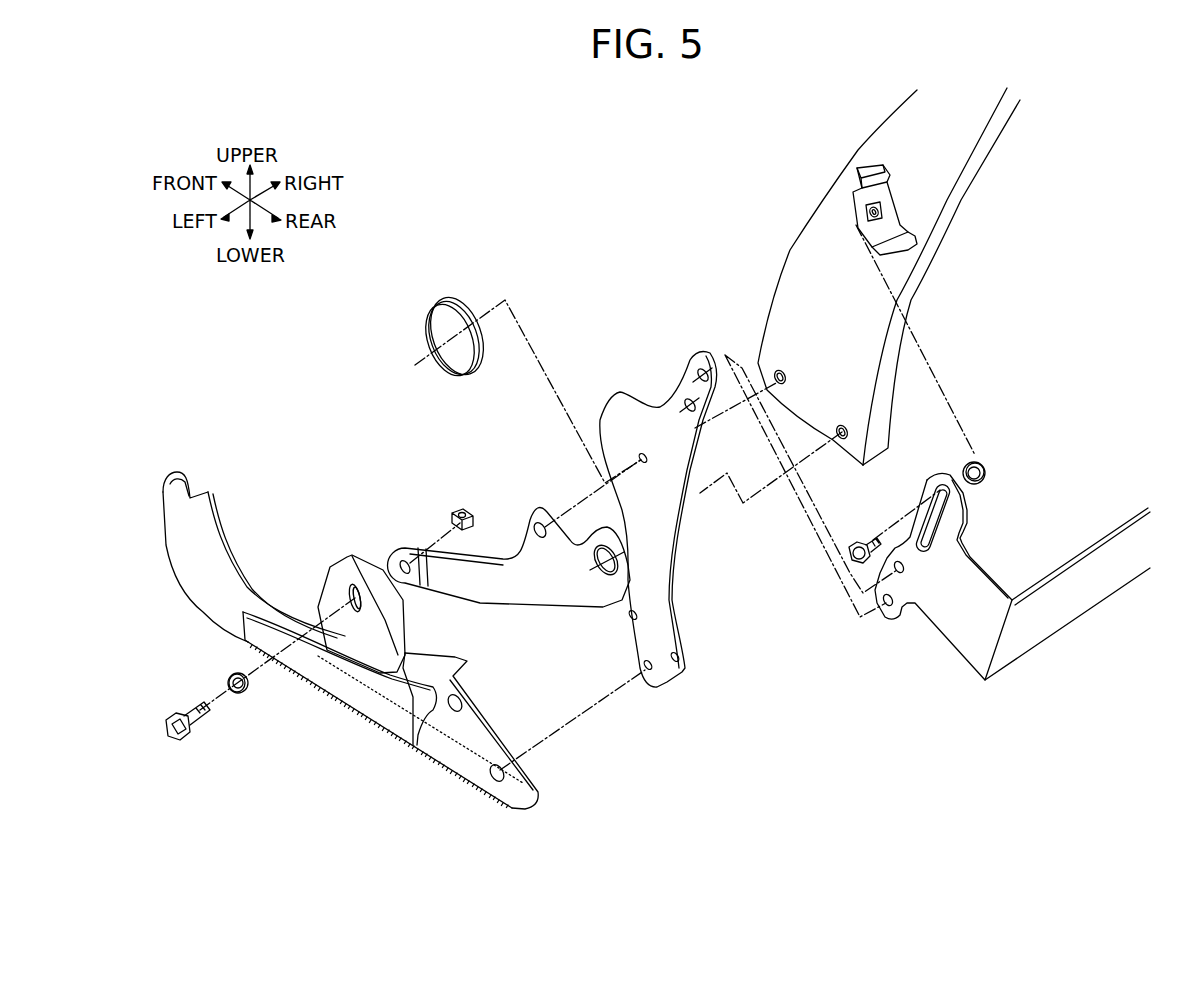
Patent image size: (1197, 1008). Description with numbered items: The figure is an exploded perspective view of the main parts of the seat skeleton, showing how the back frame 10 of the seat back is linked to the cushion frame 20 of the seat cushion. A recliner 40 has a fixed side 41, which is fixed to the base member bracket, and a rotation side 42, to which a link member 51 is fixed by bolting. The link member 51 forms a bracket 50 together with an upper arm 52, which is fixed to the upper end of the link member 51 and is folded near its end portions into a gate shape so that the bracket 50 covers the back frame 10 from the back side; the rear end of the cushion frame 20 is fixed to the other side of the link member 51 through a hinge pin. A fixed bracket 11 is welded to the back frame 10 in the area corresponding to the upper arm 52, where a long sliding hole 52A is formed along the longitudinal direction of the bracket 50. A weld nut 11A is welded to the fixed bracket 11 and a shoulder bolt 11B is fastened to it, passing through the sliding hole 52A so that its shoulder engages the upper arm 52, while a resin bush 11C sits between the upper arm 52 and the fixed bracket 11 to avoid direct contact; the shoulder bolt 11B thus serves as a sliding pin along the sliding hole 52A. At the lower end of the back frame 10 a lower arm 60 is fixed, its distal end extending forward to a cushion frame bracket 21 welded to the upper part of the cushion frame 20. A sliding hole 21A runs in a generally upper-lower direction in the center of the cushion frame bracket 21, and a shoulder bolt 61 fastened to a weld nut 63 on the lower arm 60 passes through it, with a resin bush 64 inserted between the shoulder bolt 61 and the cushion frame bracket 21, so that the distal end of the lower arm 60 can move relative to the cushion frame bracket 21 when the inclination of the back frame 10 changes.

The back frame 10 is at (810, 283).
The fixed bracket 11 is at (894, 181).
The weld nut 11A is at (882, 206).
The shoulder bolt 11B is at (855, 542).
The resin bush 11C is at (988, 477).
The cushion frame 20 is at (378, 710).
The cushion frame bracket 21 is at (342, 580).
The sliding hole 21A is at (352, 600).
The recliner 40 is at (433, 323).
The fixed side 41 is at (452, 362).
The rotation side 42 is at (468, 305).
The bracket 50 is at (874, 504).
The link member 51 is at (620, 412).
The upper arm 52 is at (1012, 582).
The sliding hole 52A is at (945, 515).
The lower arm 60 is at (550, 600).
The shoulder bolt 61 is at (178, 738).
The weld nut 63 is at (464, 510).
The resin bush 64 is at (238, 697).